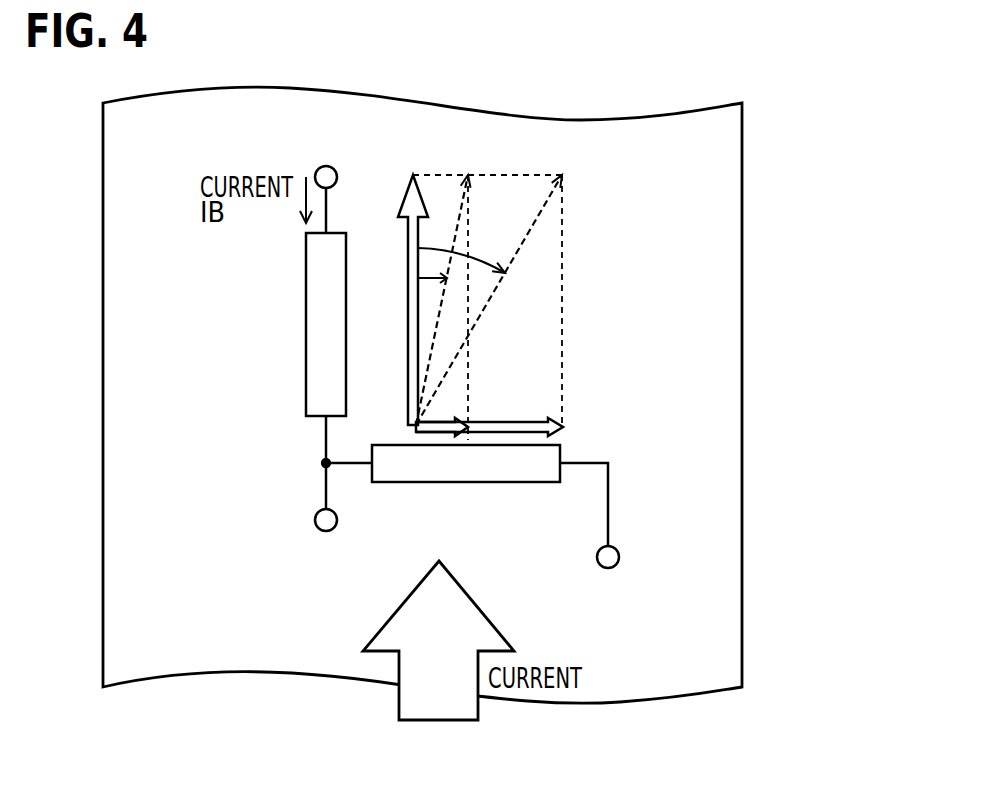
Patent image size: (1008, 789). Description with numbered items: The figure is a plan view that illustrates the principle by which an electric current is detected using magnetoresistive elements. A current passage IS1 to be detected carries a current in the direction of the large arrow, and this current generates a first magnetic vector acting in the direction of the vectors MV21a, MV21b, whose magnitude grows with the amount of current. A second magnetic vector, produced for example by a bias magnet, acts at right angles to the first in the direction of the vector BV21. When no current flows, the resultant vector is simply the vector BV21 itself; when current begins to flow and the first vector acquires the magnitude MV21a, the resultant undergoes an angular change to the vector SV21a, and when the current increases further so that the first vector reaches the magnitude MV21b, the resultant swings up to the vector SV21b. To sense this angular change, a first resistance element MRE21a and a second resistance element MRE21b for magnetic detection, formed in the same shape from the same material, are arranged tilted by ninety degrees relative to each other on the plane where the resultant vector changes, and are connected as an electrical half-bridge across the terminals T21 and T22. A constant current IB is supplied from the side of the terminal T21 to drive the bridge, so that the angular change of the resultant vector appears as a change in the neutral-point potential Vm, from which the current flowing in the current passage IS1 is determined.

The current passage to be detected IS1 is at (742, 642).
The terminal T21 is at (325, 182).
The terminal T22 is at (609, 575).
The neutral-point potential Vm is at (323, 539).
The first resistance element for magnetic detection MRE21a is at (306, 282).
The second resistance element for magnetic detection MRE21b is at (562, 450).
The second magnetic vector BV21 is at (408, 282).
The resultant vector SV21a is at (471, 289).
The resultant vector SV21b is at (529, 294).
The first magnetic vector MV21a is at (463, 411).
The first magnetic vector MV21b is at (529, 416).